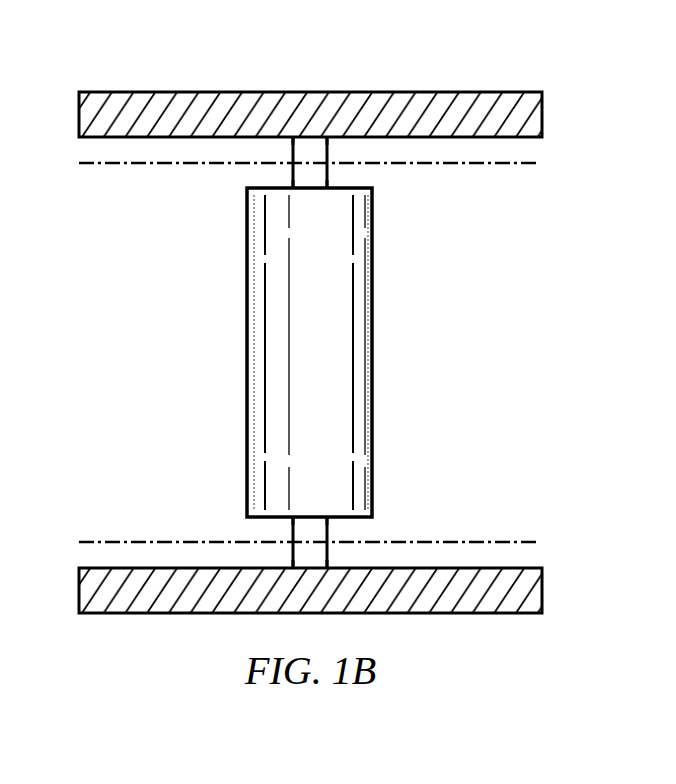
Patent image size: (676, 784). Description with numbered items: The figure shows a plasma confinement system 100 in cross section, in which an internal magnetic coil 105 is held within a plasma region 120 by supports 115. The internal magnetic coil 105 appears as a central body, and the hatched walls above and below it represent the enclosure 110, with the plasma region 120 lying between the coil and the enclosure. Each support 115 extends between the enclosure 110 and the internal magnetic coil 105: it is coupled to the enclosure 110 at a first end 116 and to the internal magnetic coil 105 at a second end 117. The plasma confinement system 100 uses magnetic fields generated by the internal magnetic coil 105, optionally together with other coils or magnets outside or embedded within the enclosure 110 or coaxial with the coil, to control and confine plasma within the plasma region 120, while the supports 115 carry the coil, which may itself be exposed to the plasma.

The plasma confinement system 100 is at (162, 15).
The internal magnetic coil 105 is at (373, 304).
The enclosure 110 is at (458, 92).
The support 115 is at (328, 188).
The first end 116 is at (315, 137).
The second end 117 is at (294, 187).
The plasma region 120 is at (457, 542).